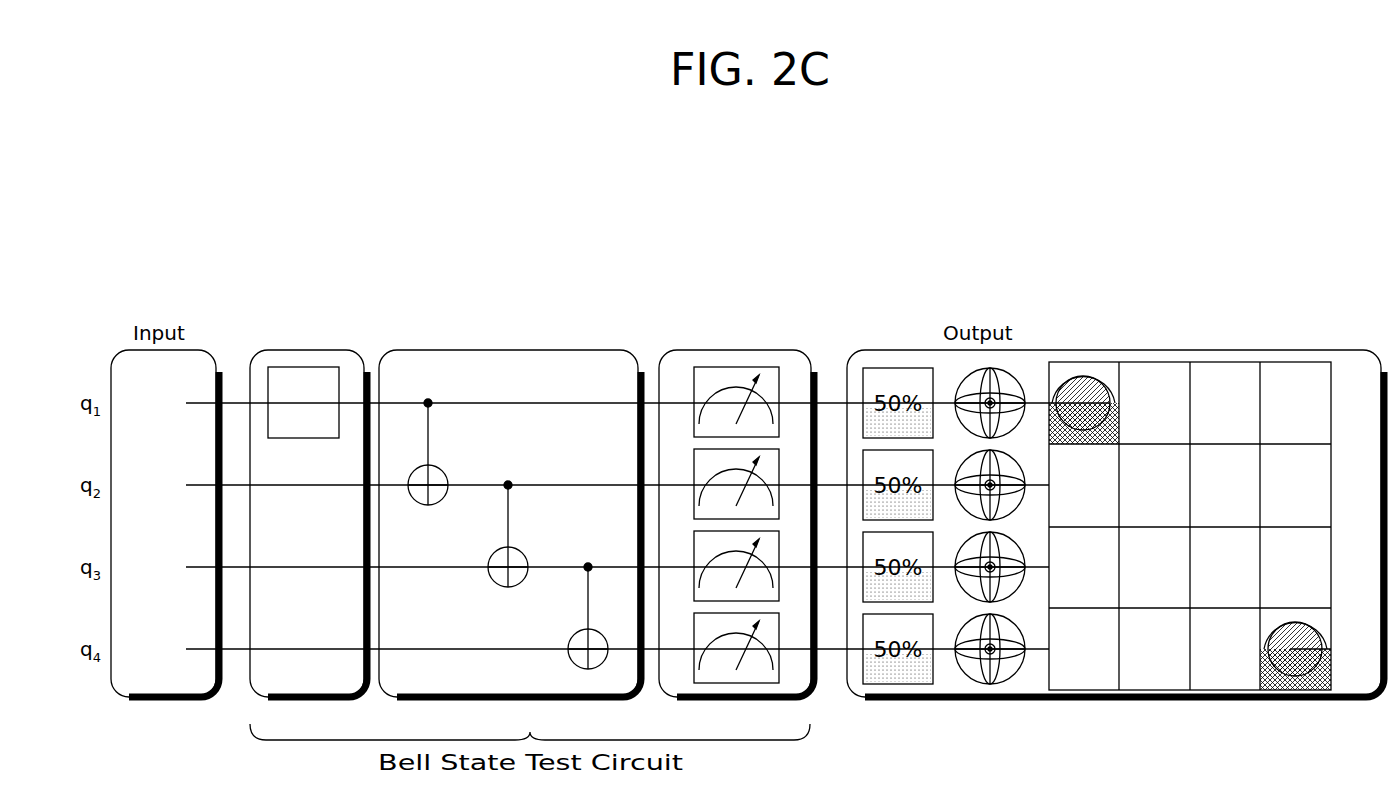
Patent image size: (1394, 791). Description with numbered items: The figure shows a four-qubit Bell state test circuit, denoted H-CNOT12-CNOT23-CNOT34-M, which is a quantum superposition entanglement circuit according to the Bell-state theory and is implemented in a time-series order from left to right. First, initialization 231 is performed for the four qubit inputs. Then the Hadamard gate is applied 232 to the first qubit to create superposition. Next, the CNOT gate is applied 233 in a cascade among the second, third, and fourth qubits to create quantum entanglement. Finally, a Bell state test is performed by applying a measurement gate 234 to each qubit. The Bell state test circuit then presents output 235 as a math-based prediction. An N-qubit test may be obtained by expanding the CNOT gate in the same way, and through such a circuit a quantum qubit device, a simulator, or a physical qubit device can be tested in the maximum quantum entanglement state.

The initialization 231 is at (204, 350).
The Hadamard gate application 232 is at (312, 350).
The CNOT gate application 233 is at (572, 350).
The measurement gate 234 is at (770, 350).
The output 235 is at (1323, 350).